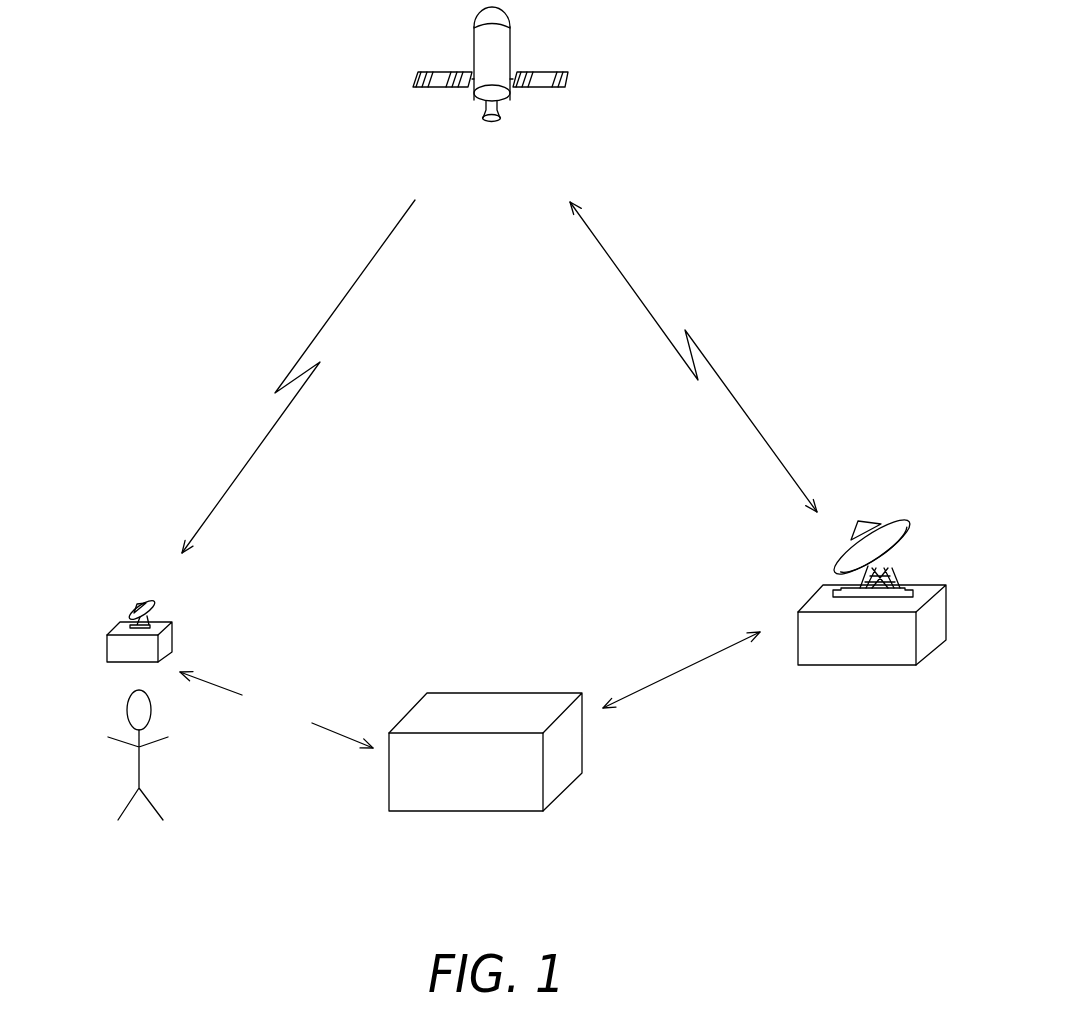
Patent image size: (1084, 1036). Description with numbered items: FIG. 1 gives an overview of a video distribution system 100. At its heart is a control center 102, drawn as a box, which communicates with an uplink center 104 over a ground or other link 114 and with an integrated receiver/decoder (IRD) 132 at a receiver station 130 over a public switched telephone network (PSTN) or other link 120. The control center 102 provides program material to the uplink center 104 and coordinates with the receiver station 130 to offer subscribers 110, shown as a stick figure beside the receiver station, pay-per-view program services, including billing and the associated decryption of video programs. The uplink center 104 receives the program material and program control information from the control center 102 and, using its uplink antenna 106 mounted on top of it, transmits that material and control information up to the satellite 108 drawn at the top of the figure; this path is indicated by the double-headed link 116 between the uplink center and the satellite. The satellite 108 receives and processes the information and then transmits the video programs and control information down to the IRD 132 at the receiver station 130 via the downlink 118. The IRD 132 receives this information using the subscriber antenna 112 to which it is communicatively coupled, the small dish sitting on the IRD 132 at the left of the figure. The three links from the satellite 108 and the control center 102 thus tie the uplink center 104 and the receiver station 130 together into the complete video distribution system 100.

The video distribution system 100 is at (790, 243).
The control center 102 is at (562, 792).
The uplink center 104 is at (855, 665).
The uplink antenna 106 is at (915, 530).
The satellite 108 is at (538, 87).
The subscribers 110 is at (165, 762).
The subscriber antenna 112 is at (138, 600).
The ground or other link 114 is at (675, 670).
The satellite-gateway link 116 is at (737, 400).
The downlink 118 is at (345, 295).
The public switched telephone network or other link 120 is at (310, 680).
The receiver station 130 is at (193, 607).
The integrated receiver/decoder 132 is at (107, 647).